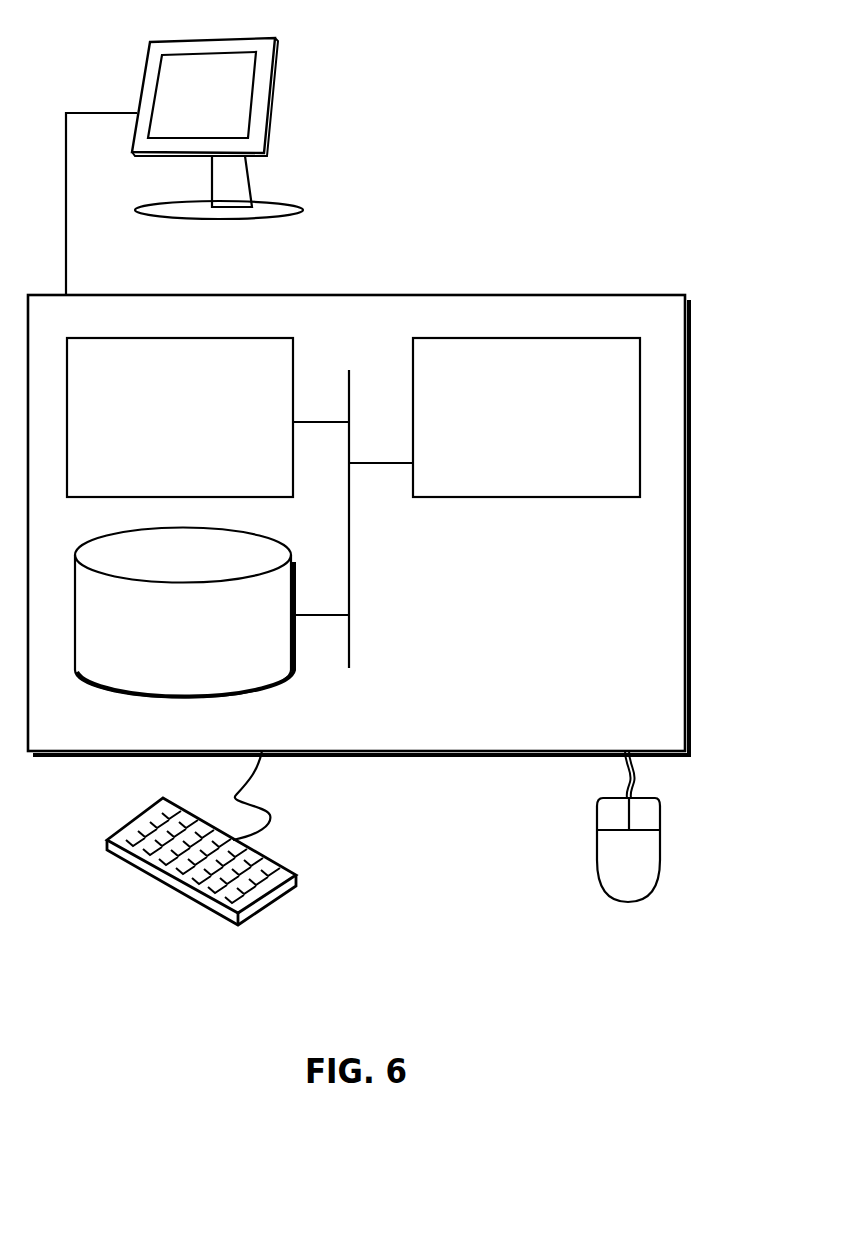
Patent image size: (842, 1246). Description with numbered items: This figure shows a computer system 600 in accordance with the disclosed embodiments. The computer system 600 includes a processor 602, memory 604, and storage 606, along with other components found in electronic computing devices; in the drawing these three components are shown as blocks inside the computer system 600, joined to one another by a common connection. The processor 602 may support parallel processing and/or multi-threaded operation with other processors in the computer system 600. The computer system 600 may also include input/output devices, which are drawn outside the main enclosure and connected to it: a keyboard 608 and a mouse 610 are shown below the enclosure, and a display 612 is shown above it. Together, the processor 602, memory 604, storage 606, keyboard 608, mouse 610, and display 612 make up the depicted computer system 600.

The computer system 600 is at (403, 262).
The processor 602 is at (509, 428).
The memory 604 is at (159, 428).
The storage 606 is at (166, 640).
The keyboard 608 is at (127, 862).
The mouse 610 is at (606, 873).
The display 612 is at (184, 166).